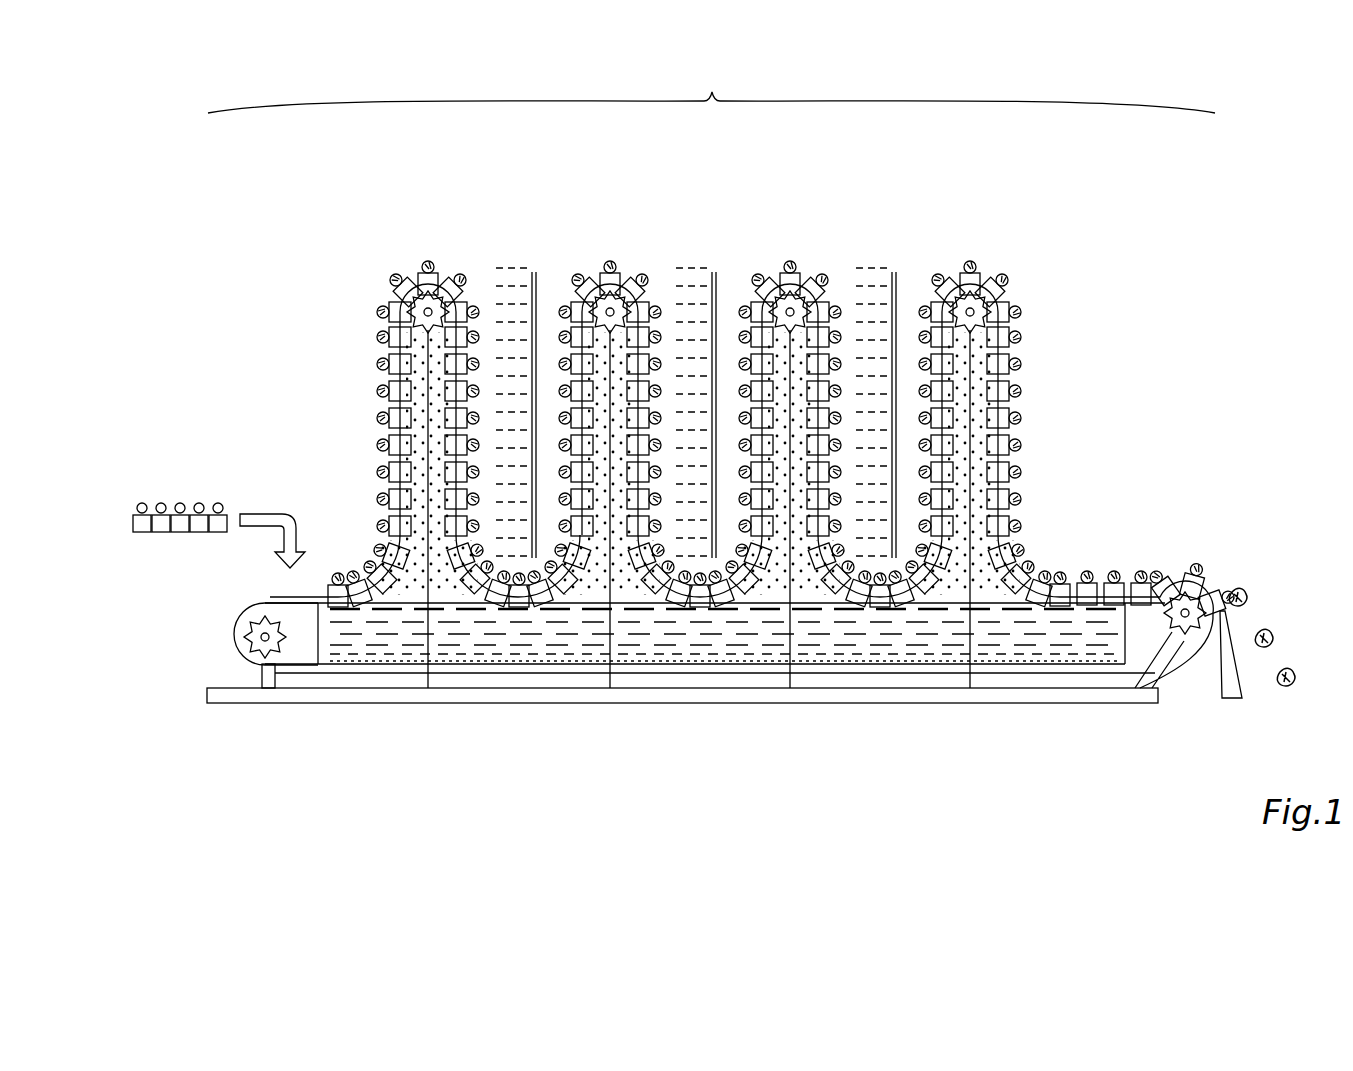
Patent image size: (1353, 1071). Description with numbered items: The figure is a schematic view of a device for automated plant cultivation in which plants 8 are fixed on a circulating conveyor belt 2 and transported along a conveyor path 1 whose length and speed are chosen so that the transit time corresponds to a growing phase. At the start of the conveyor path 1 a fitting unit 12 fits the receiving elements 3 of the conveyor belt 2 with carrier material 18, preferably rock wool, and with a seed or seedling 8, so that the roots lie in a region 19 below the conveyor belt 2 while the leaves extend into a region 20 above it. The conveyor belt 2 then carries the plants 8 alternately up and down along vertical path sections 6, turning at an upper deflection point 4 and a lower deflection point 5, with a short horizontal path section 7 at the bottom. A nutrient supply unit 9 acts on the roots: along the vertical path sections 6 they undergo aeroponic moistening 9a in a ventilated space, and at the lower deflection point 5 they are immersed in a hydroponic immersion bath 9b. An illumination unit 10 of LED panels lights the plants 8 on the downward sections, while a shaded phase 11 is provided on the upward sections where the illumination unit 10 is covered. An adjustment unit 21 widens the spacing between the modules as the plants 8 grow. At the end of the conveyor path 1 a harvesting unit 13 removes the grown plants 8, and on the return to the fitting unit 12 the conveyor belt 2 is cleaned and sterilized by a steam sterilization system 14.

The conveyor path 1 is at (711, 86).
The conveyor belt 2 is at (255, 637).
The receiving element 3 is at (703, 480).
The upper deflection point 4 is at (425, 278).
The lower deflection point 5 is at (510, 608).
The vertical path section 6 is at (668, 515).
The horizontal path section 7 is at (816, 255).
The plant 8 is at (392, 442).
The nutrient supply unit 9 is at (359, 533).
The aeroponic nutrient supply unit 9a is at (398, 334).
The hydroponic nutrient supply unit 9b is at (934, 652).
The illumination unit 10 is at (892, 272).
The shaded phase 11 is at (727, 352).
The fitting unit 12 is at (202, 478).
The harvesting unit 13 is at (1278, 566).
The steam sterilization system 14 is at (1088, 674).
The carrier material 18 is at (342, 606).
The region below the conveyor belt 19 is at (314, 612).
The region above the conveyor belt 20 is at (330, 600).
The adjustment unit 21 is at (806, 585).